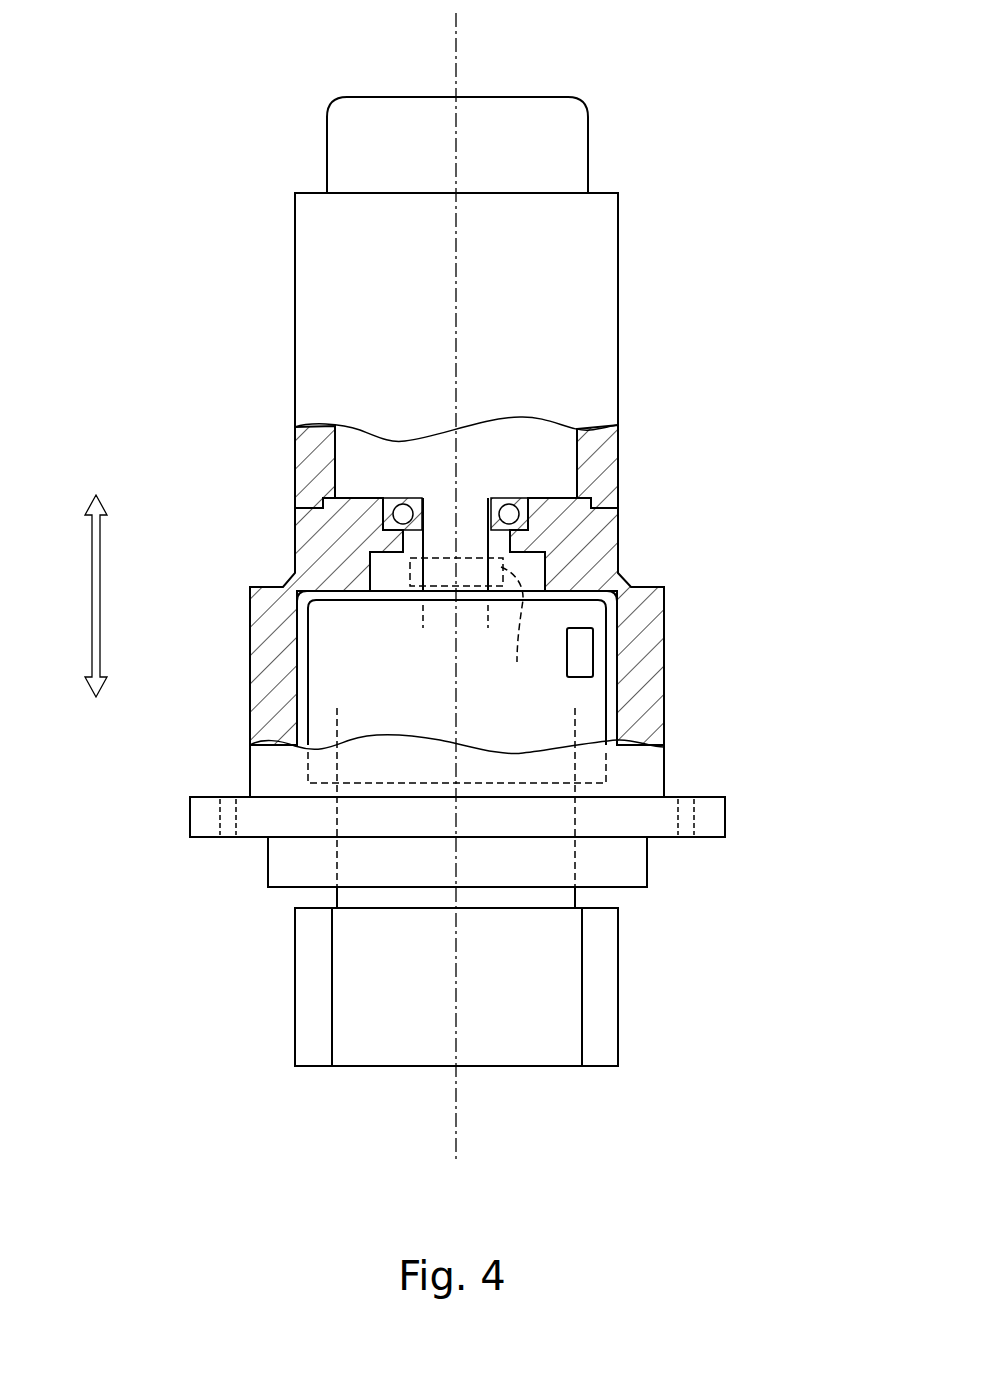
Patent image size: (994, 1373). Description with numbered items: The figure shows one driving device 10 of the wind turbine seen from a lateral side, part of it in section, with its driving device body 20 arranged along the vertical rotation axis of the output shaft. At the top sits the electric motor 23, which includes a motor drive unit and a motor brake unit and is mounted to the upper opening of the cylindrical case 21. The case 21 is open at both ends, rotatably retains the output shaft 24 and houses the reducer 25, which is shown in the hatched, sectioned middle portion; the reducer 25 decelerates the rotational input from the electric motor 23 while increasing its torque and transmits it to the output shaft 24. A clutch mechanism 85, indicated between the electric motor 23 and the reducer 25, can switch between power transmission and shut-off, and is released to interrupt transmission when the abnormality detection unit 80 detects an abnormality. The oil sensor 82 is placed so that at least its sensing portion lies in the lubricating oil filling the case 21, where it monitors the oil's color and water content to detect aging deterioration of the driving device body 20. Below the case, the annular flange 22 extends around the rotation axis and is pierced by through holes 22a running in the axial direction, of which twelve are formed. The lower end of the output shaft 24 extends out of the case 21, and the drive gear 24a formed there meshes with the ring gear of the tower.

The driving device 10 is at (438, 587).
The driving device body 20 is at (677, 107).
The case 21 is at (667, 622).
The flange 22 is at (710, 815).
The through hole 22a is at (228, 795).
The electric motor 23 is at (620, 318).
The output shaft 24 is at (562, 897).
The drive gear 24a is at (400, 1043).
The reducer 25 is at (340, 666).
The abnormality detection unit 80 is at (668, 652).
The oil sensor 82 is at (583, 653).
The clutch mechanism 85 is at (517, 628).